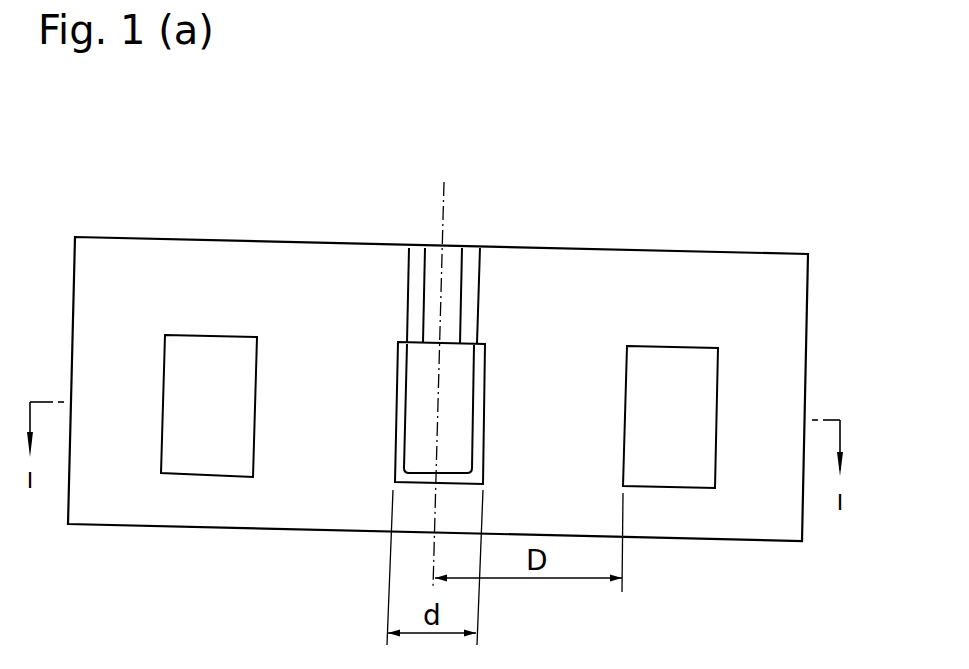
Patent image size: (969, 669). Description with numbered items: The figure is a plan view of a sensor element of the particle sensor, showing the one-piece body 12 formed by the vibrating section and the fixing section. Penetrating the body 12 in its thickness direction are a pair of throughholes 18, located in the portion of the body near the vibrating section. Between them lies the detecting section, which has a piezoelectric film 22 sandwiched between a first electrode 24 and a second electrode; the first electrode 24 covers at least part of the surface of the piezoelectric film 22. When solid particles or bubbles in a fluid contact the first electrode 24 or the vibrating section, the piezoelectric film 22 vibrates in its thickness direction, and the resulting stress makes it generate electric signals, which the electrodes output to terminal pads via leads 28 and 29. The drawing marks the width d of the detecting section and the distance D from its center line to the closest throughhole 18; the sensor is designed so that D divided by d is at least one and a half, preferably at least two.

The body 12 is at (725, 268).
The throughhole 18 is at (716, 413).
The piezoelectric film 22 is at (398, 397).
The first electrode 24 is at (428, 355).
The lead 28 is at (415, 252).
The lead 29 is at (472, 252).